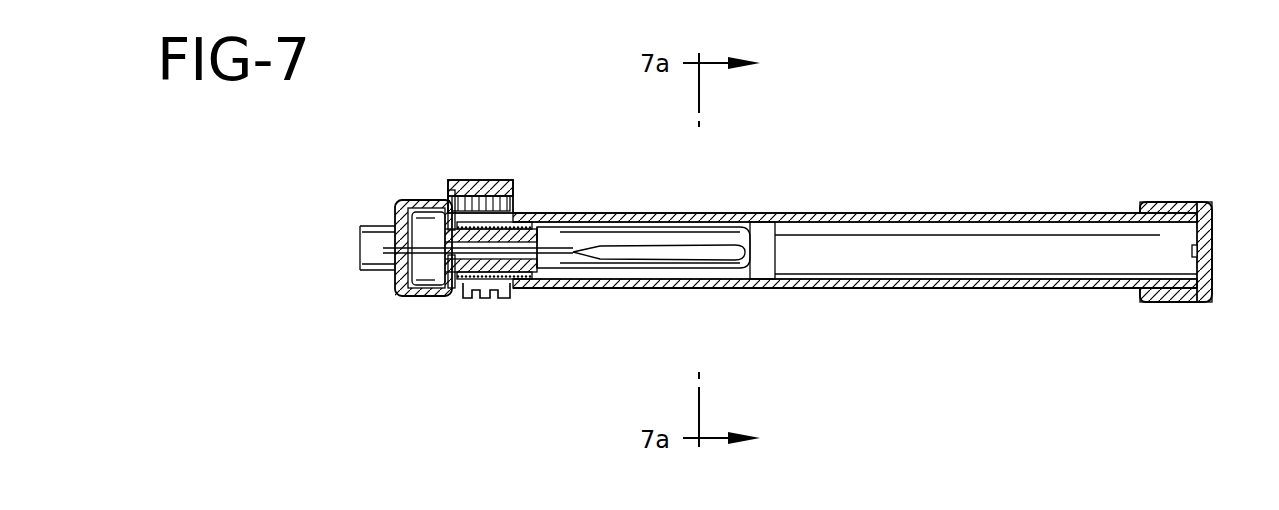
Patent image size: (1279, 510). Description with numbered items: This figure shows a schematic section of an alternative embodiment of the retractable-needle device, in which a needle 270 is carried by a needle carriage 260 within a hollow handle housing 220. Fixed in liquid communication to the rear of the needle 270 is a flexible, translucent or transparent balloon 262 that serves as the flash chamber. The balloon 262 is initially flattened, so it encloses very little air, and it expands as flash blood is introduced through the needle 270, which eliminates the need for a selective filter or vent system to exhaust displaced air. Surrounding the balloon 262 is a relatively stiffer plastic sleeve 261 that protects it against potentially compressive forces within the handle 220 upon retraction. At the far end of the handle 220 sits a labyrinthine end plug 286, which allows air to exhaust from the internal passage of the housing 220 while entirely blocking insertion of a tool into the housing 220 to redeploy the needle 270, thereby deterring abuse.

The hollow handle housing 220 is at (872, 210).
The labyrinthine end plug 286 is at (1172, 200).
The needle carriage 260 is at (512, 218).
The plastic sleeve 261 is at (732, 270).
The balloon 262 is at (656, 255).
The needle 270 is at (382, 268).